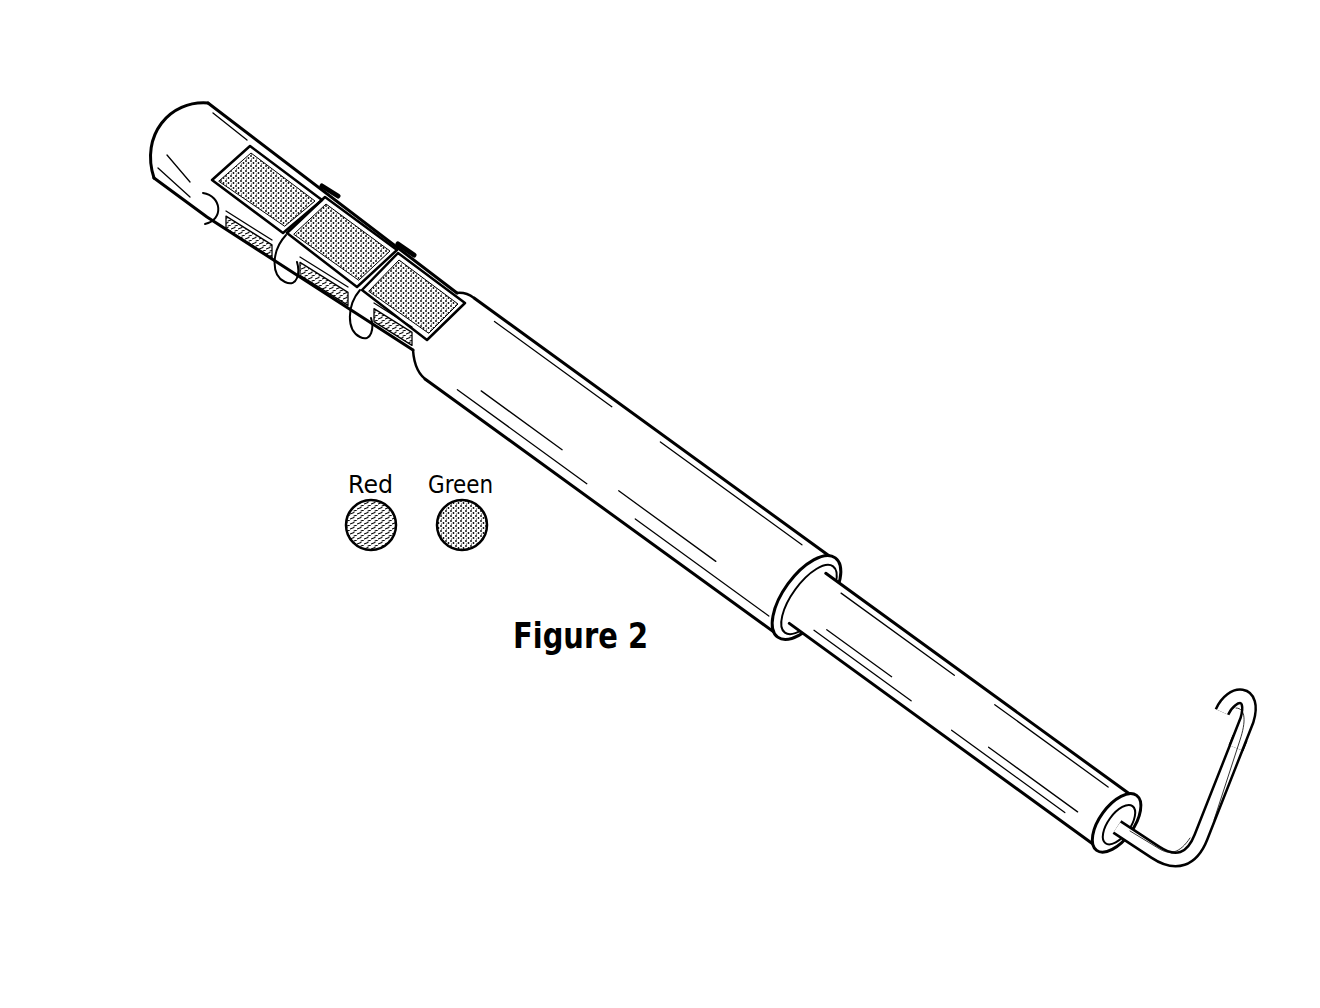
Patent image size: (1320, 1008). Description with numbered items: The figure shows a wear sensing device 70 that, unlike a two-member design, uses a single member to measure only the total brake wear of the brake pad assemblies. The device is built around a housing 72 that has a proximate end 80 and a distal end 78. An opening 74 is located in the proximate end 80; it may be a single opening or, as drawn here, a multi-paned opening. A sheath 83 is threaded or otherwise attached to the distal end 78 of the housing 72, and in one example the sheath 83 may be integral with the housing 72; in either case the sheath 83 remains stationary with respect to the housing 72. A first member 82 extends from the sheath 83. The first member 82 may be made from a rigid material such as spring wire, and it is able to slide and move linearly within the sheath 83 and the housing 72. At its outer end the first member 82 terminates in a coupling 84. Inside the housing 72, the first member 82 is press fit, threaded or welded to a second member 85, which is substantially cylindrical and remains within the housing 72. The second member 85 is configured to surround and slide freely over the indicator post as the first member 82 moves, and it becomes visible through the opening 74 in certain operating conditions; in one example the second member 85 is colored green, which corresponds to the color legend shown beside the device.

The wear sensing device 70 is at (730, 443).
The housing 72 is at (555, 397).
The opening 74 is at (410, 266).
The distal end 78 is at (830, 537).
The proximate end 80 is at (237, 103).
The first member 82 is at (1163, 836).
The sheath 83 is at (880, 630).
The coupling 84 is at (1232, 698).
The second member 85 is at (348, 236).